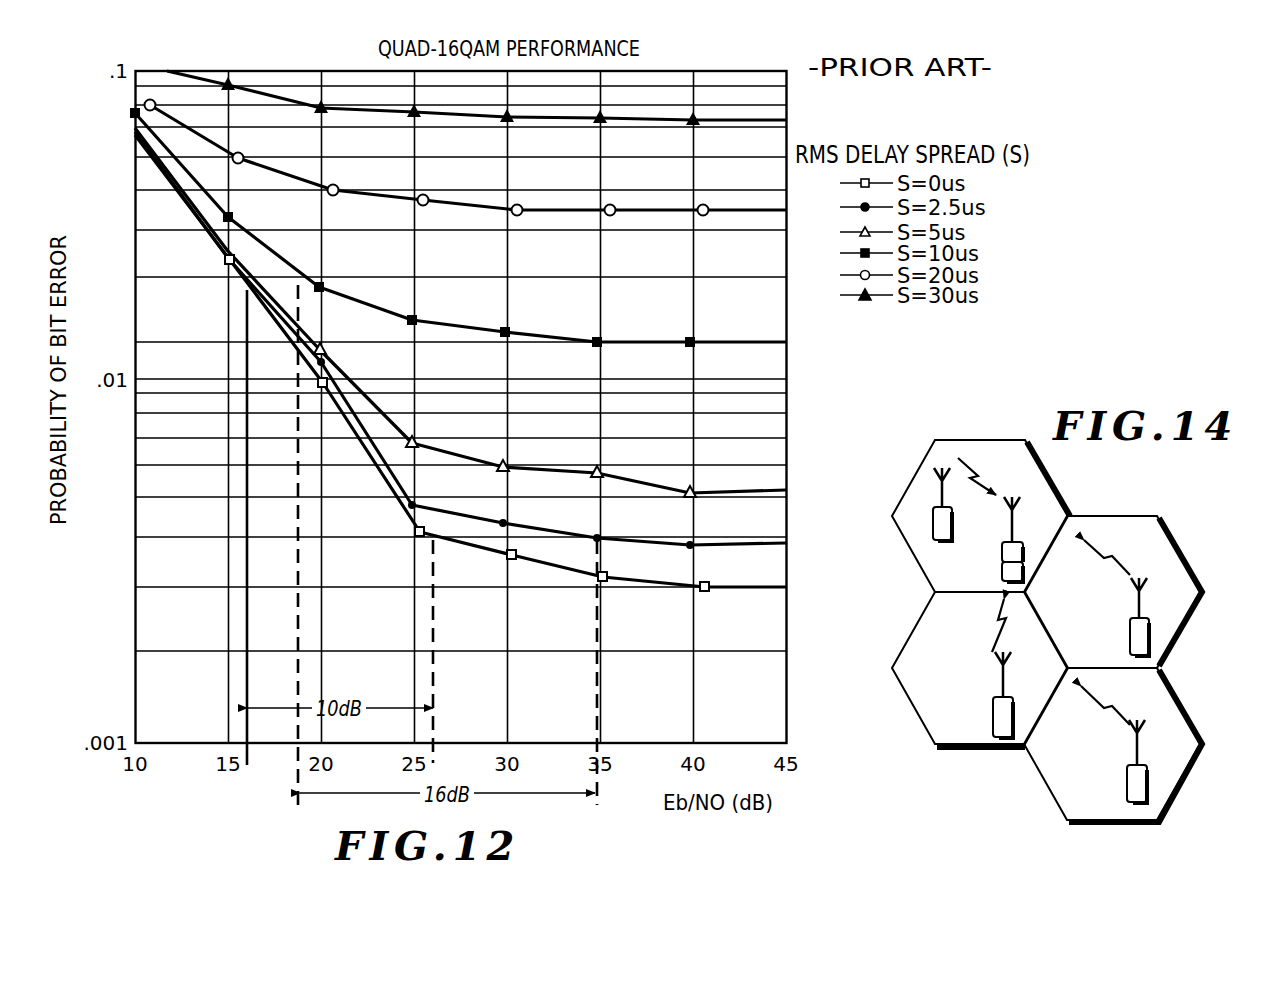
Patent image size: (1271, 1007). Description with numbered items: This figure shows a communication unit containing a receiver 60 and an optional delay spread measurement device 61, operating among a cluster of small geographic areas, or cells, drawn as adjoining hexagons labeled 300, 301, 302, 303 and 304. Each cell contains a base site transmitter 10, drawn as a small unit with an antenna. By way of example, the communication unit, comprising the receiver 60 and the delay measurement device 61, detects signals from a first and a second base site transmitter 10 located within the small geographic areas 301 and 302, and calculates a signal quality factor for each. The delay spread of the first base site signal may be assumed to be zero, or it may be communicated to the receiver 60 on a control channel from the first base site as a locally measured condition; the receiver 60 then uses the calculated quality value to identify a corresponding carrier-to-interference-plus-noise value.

The base site transmitter 10 is at (933, 526).
The receiver 60 is at (1002, 555).
The delay measurement device 61 is at (1023, 567).
The cellular system 300 is at (1047, 631).
The small geographic area 301 is at (980, 669).
The small geographic area 302 is at (981, 516).
The cell 303 is at (1113, 592).
The cell 304 is at (1113, 745).